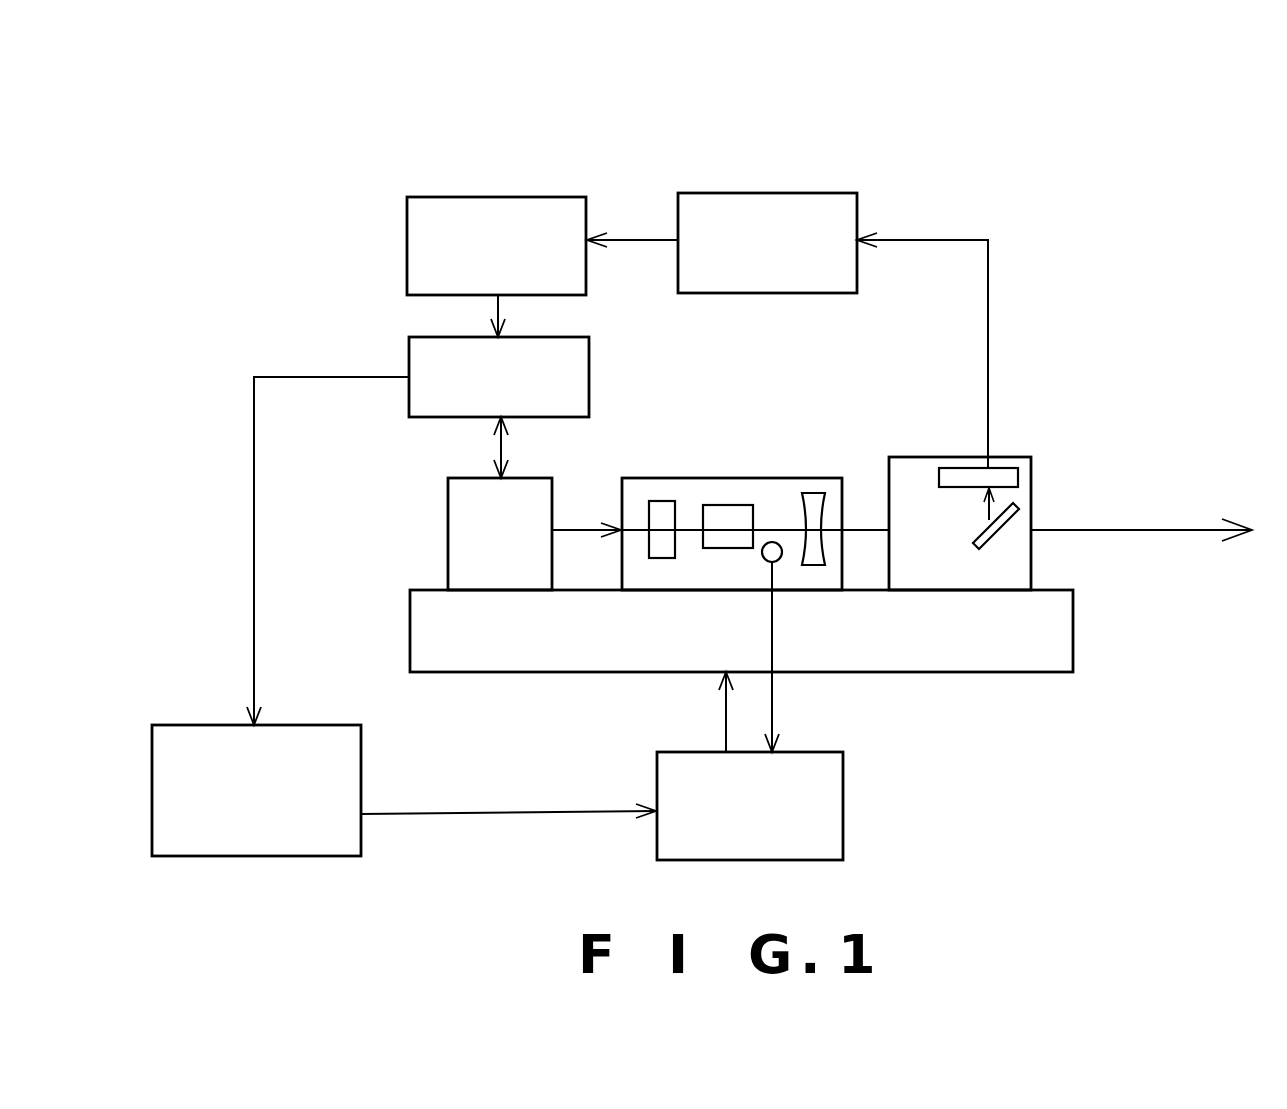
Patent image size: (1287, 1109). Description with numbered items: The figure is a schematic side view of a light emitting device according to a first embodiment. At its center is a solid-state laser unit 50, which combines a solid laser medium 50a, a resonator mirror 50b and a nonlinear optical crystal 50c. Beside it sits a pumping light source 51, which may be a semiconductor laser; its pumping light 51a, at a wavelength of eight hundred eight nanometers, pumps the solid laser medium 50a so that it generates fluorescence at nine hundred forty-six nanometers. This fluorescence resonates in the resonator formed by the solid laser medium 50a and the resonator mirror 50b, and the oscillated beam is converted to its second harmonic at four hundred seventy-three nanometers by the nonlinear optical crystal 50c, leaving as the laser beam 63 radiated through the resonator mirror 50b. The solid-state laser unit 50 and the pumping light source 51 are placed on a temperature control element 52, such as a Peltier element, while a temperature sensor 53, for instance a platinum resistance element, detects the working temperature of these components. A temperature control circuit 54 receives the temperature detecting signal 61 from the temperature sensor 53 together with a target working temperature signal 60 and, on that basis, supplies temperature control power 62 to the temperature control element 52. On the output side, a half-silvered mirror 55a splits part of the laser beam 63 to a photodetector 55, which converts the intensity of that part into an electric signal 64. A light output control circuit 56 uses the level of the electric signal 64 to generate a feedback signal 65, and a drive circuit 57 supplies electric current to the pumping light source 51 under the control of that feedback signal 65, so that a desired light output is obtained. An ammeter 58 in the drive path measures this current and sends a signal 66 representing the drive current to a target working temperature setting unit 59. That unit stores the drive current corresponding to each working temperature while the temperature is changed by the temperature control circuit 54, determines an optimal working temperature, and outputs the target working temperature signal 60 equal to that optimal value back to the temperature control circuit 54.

The solid-state laser unit 50 is at (755, 483).
The solid laser medium 50a is at (659, 500).
The resonator mirror 50b is at (810, 493).
The nonlinear optical crystal 50c is at (727, 504).
The pumping light source 51 is at (450, 552).
The pumping light 51a is at (575, 530).
The temperature control element 52 is at (1054, 632).
The temperature sensor 53 is at (780, 558).
The temperature control circuit 54 is at (844, 822).
The photodetector 55 is at (1010, 467).
The half-silvered mirror 55a is at (1018, 512).
The light output control circuit 56 is at (790, 193).
The drive circuit 57 is at (512, 197).
The ammeter 58 is at (409, 351).
The target working temperature setting unit 59 is at (181, 725).
The target working temperature signal 60 is at (488, 811).
The temperature detecting signal 61 is at (776, 710).
The temperature control power 62 is at (724, 718).
The laser beam 63 is at (1172, 528).
The electric signal 64 is at (952, 240).
The feedback signal 65 is at (636, 240).
The signal representing the drive current 66 is at (254, 556).